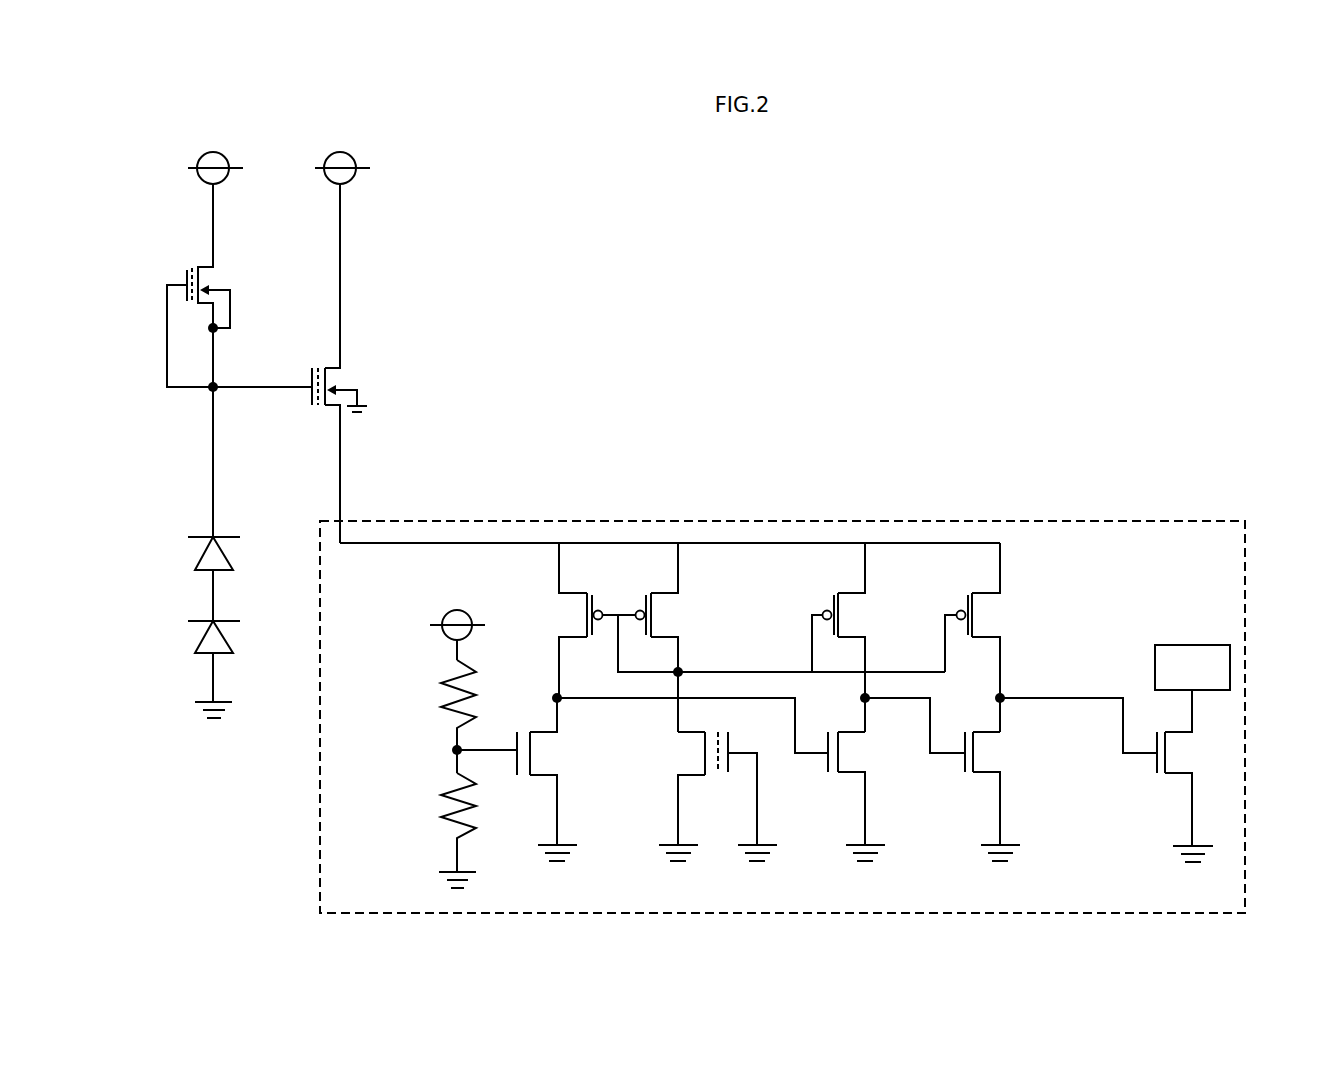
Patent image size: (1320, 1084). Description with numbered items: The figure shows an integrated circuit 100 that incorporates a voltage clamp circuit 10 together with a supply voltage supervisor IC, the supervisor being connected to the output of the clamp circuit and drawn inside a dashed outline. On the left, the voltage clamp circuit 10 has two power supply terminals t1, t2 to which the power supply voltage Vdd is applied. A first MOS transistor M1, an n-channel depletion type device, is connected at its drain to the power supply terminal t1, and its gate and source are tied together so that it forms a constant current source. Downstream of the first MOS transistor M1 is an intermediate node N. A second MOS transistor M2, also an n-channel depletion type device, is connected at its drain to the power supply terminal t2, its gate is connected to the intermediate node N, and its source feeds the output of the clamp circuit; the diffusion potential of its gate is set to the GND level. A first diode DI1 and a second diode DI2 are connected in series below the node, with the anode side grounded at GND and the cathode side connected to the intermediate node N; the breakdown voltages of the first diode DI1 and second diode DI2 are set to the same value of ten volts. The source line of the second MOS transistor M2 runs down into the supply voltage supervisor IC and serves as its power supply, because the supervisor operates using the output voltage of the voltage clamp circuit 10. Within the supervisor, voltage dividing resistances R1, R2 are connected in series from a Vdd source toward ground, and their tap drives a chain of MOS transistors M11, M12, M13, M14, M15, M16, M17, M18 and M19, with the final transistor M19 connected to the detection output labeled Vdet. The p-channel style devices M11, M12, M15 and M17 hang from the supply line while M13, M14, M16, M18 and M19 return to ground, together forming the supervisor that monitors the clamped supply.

The integrated circuit 100 is at (611, 277).
The voltage clamp circuit 10 is at (363, 245).
The supply voltage supervisor IC is at (688, 520).
The power supply terminal t1 is at (213, 152).
The power supply terminal t2 is at (340, 152).
The first MOS transistor M1 is at (218, 285).
The second MOS transistor M2 is at (359, 363).
The intermediate node N is at (211, 392).
The first diode DI1 is at (239, 579).
The second diode DI2 is at (239, 661).
The GND level GND is at (220, 732).
The power supply voltage Vdd is at (447, 616).
The voltage dividing resistance R1 is at (438, 716).
The voltage dividing resistance R2 is at (438, 830).
The MOS transistor M11 is at (595, 620).
The MOS transistor M12 is at (678, 637).
The MOS transistor M13 is at (533, 777).
The MOS transistor M14 is at (706, 796).
The MOS transistor M15 is at (811, 637).
The MOS transistor M16 is at (721, 779).
The MOS transistor M17 is at (962, 637).
The MOS transistor M18 is at (942, 779).
The MOS transistor M19 is at (1120, 776).
The detection output terminal Vdet is at (1192, 667).